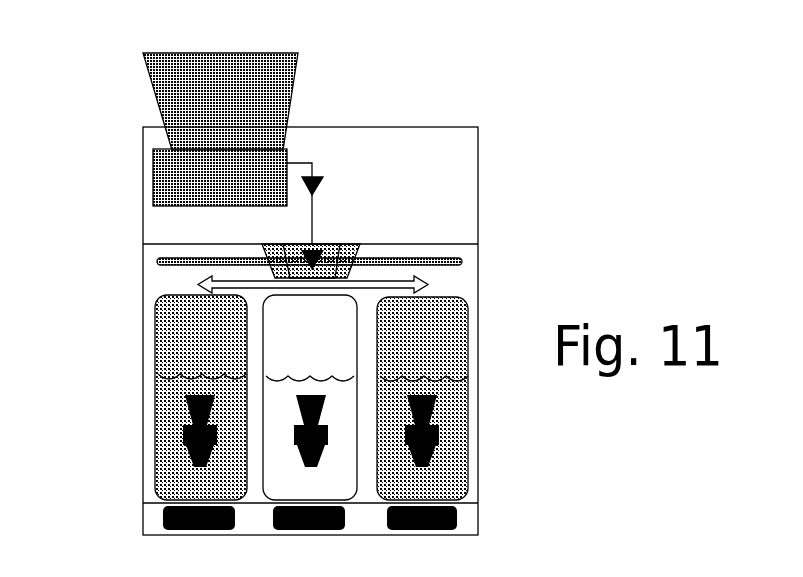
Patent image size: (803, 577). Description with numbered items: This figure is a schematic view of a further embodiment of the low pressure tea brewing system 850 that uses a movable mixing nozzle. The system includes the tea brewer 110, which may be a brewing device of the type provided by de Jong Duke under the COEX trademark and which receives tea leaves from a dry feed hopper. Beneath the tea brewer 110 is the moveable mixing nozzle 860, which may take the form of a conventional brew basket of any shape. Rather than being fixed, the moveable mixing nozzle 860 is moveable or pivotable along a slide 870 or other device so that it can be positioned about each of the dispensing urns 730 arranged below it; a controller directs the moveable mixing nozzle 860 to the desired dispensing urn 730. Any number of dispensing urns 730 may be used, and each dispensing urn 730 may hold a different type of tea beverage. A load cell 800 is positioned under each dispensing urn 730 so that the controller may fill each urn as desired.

The low pressure tea brewing system 850 is at (104, 68).
The tea brewer 110 is at (156, 182).
The moveable mixing nozzle 860 is at (346, 245).
The slide 870 is at (440, 262).
The dispensing urn 730 is at (468, 413).
The load cell 800 is at (436, 531).